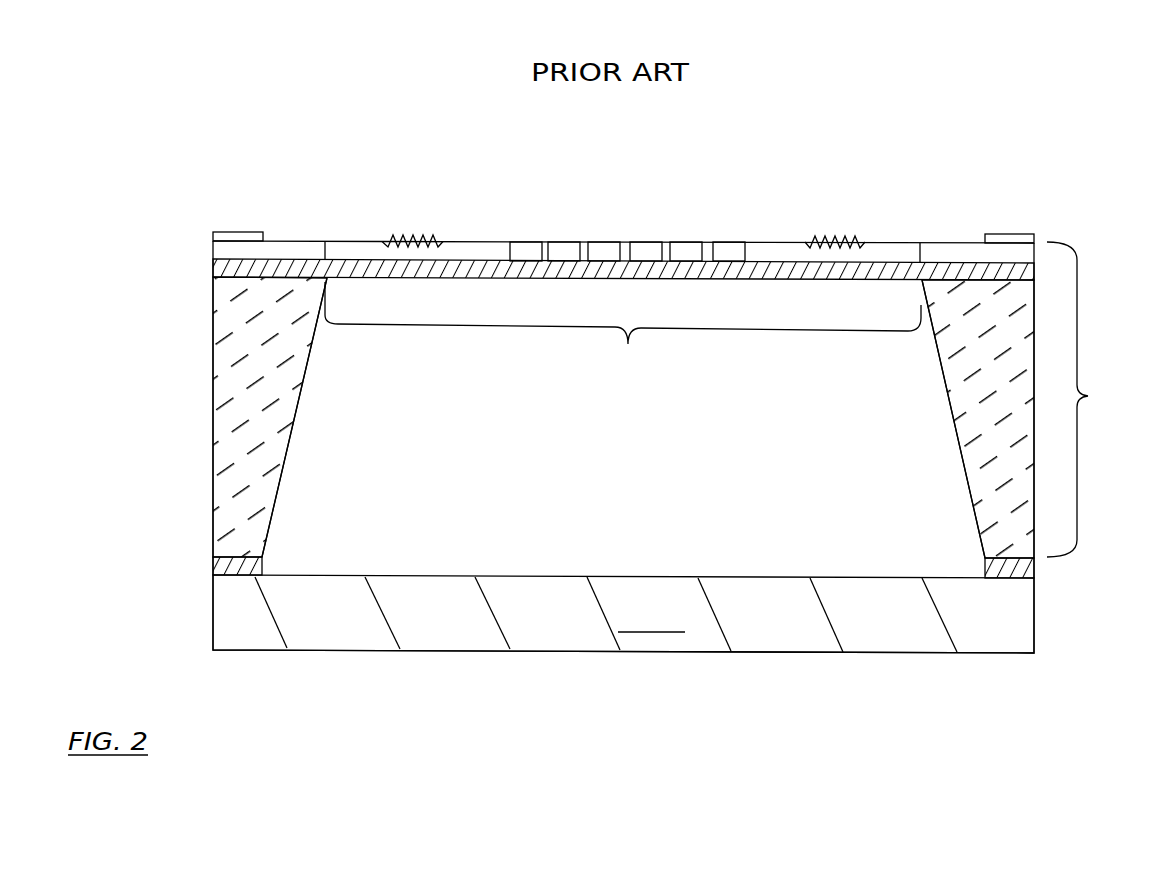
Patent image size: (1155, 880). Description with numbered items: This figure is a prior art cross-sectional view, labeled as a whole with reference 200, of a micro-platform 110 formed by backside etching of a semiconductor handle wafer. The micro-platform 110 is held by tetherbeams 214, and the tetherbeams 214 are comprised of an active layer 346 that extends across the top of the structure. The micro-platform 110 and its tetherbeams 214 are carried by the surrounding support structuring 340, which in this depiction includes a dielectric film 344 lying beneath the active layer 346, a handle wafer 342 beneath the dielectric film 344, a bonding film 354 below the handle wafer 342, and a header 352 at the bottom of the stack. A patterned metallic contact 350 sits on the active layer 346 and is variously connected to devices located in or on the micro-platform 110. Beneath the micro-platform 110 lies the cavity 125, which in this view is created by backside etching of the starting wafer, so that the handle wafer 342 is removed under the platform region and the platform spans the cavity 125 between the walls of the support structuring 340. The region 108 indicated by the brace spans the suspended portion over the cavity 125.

The prior art pressure sensor 200 is at (92, 87).
The patterned metallic contact 350 is at (232, 231).
The active layer 346 is at (212, 251).
The tetherbeams 214 is at (370, 241).
The micro-platform 110 is at (745, 235).
The dielectric film 344 is at (212, 268).
The handle wafer 342 is at (213, 367).
The cavity 125 is at (691, 450).
The membrane 108 is at (623, 329).
The surrounding support structuring 340 is at (1090, 399).
The bonding film 354 is at (213, 560).
The header 352 is at (213, 615).